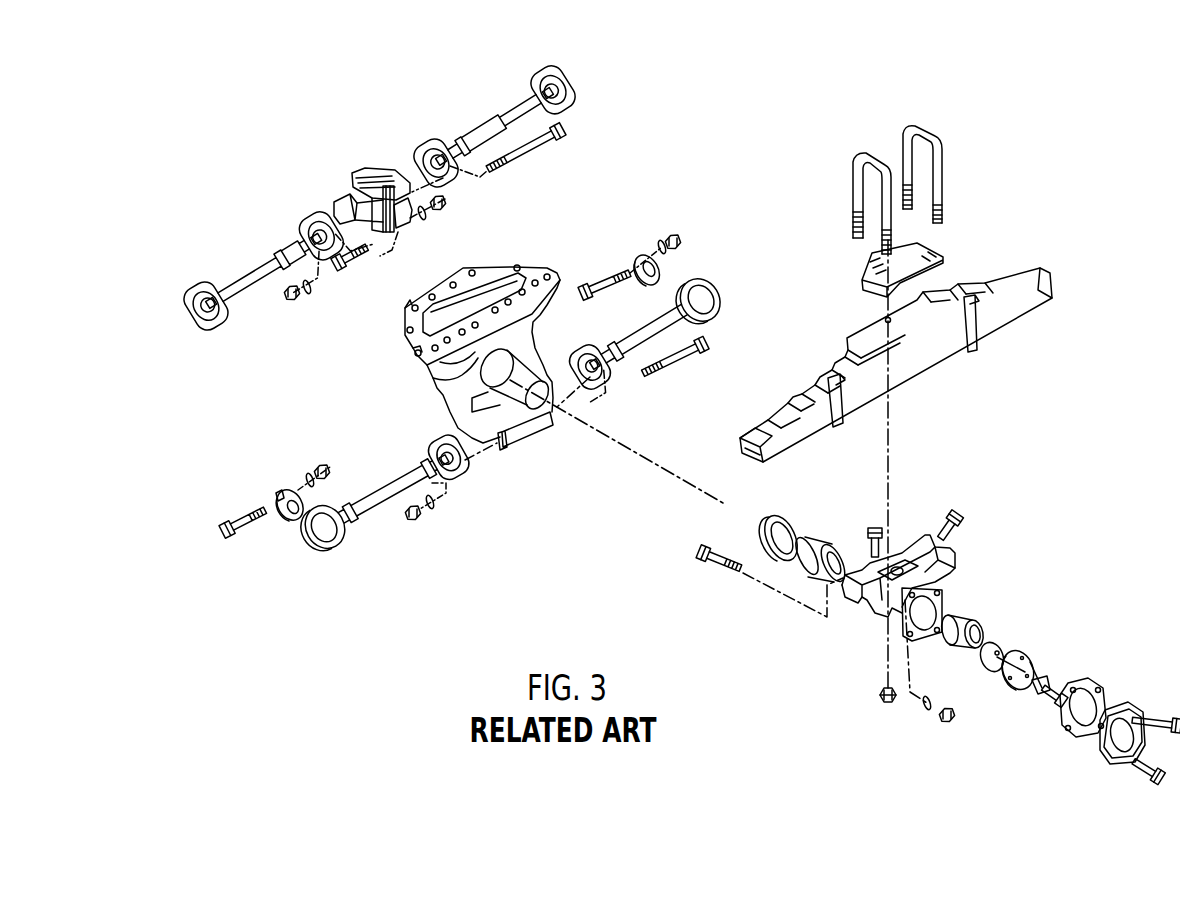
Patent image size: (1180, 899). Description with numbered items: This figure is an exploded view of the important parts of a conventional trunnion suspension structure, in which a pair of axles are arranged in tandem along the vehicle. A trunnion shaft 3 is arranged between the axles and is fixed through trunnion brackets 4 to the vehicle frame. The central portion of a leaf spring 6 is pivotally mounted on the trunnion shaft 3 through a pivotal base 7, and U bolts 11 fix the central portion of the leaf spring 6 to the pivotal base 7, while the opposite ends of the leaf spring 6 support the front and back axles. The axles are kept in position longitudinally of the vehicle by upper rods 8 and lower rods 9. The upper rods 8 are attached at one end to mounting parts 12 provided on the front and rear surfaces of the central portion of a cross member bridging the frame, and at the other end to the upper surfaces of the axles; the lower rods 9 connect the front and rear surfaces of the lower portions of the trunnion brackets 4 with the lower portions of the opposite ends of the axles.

The trunnion shaft 3 is at (508, 380).
The trunnion bracket 4 is at (533, 317).
The leaf spring 6 is at (917, 353).
The pivotal base 7 is at (950, 578).
The upper rod 8 is at (495, 127).
The lower rod 9 is at (643, 340).
The U bolt 11 is at (867, 152).
The mounting part 12 is at (388, 180).